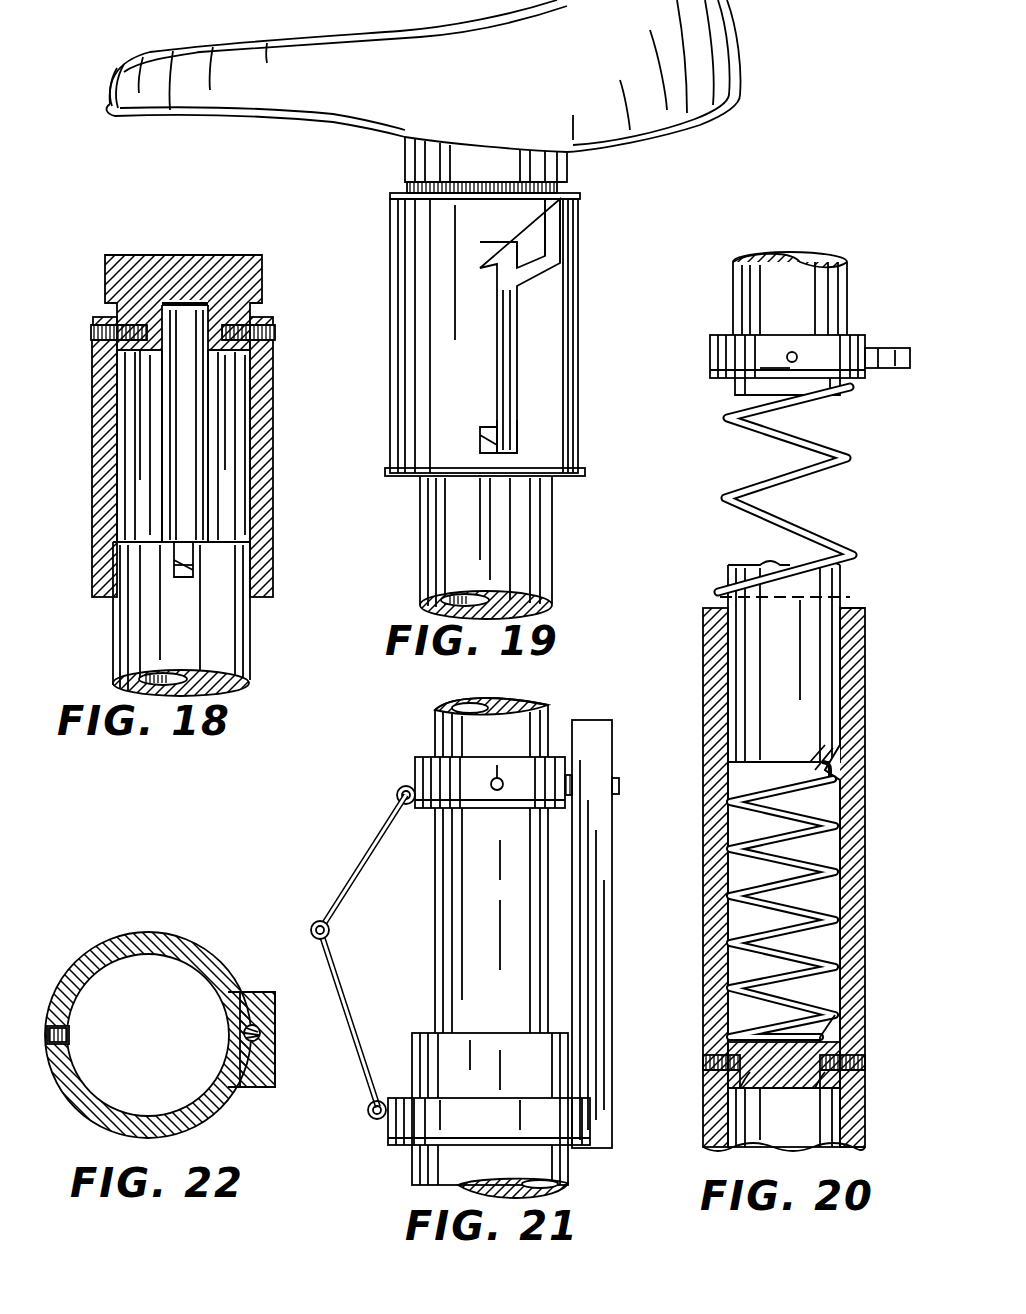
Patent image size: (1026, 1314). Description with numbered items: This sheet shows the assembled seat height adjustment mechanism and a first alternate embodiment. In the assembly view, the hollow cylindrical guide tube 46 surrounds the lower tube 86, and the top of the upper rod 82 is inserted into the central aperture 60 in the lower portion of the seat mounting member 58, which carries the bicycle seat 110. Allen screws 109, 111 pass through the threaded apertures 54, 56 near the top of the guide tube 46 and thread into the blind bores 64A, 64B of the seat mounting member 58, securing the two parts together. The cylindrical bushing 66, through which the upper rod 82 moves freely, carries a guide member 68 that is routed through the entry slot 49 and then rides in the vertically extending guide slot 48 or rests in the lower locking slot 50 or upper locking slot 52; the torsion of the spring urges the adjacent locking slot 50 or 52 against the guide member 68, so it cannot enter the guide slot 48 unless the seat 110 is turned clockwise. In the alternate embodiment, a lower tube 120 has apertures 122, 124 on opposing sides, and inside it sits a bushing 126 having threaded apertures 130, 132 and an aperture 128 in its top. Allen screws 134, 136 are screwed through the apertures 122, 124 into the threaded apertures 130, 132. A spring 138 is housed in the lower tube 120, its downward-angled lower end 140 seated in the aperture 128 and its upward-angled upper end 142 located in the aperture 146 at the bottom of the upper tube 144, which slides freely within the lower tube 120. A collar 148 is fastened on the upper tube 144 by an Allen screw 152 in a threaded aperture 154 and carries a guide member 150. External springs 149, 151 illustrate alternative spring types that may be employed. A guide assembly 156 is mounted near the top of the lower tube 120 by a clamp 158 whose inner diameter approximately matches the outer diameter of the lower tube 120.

In FIG. 18, the guide tube 46 is at (264, 415).
In FIG. 19, the guide tube 46 is at (391, 310).
In FIG. 19, the guide slot 48 is at (512, 335).
In FIG. 19, the entry slot 49 is at (560, 232).
In FIG. 19, the locking slot 50 is at (488, 432).
In FIG. 19, the locking slot 52 is at (478, 248).
In FIG. 18, the threaded aperture 54 is at (92, 340).
In FIG. 18, the threaded aperture 56 is at (273, 345).
In FIG. 18, the seat mounting member 58 is at (264, 267).
In FIG. 19, the seat mounting member 58 is at (407, 165).
In FIG. 18, the central aperture 60 is at (205, 300).
In FIG. 18, the blind bore 64A is at (139, 446).
In FIG. 18, the blind bore 64B is at (228, 446).
In FIG. 18, the bushing 66 is at (181, 555).
In FIG. 18, the guide member 68 is at (174, 572).
In FIG. 19, the guide member 68 is at (482, 441).
In FIG. 18, the upper rod 82 is at (206, 405).
In FIG. 19, the upper rod 82 is at (505, 365).
In FIG. 18, the lower tube 86 is at (113, 649).
In FIG. 19, the lower tube 86 is at (545, 545).
In FIG. 18, the Allen screw 109 is at (93, 326).
In FIG. 19, the bicycle seat 110 is at (345, 100).
In FIG. 18, the Allen screw 111 is at (274, 328).
In FIG. 20, the lower tube 120 is at (850, 828).
In FIG. 21, the lower tube 120 is at (412, 1045).
In FIG. 20, the aperture 122 is at (703, 1073).
In FIG. 20, the aperture 124 is at (865, 1073).
In FIG. 20, the bushing 126 is at (790, 1115).
In FIG. 20, the aperture 128 is at (845, 1030).
In FIG. 20, the threaded aperture 130 is at (755, 1095).
In FIG. 20, the threaded aperture 132 is at (804, 1095).
In FIG. 20, the Allen screw 134 is at (702, 1053).
In FIG. 20, the Allen screw 136 is at (865, 1055).
In FIG. 20, the spring 138 is at (840, 900).
In FIG. 20, the lower end of spring 140 is at (838, 1045).
In FIG. 20, the upper end of spring 142 is at (835, 775).
In FIG. 20, the upper tube 144 is at (843, 565).
In FIG. 21, the upper tube 144 is at (455, 917).
In FIG. 20, the aperture 146 is at (845, 755).
In FIG. 20, the collar 148 is at (860, 378).
In FIG. 21, the collar 148 is at (430, 808).
In FIG. 20, the external spring 149 is at (835, 462).
In FIG. 20, the guide member 150 is at (885, 346).
In FIG. 21, the guide member 150 is at (622, 785).
In FIG. 21, the external spring 151 is at (348, 965).
In FIG. 20, the Allen screw 152 is at (795, 350).
In FIG. 21, the Allen screw 152 is at (495, 790).
In FIG. 20, the threaded aperture 154 is at (761, 357).
In FIG. 21, the threaded aperture 154 is at (500, 777).
In FIG. 21, the guide assembly 156 is at (603, 862).
In FIG. 22, the guide assembly 156 is at (258, 1010).
In FIG. 21, the clamp 158 is at (582, 1128).
In FIG. 22, the clamp 158 is at (218, 1128).